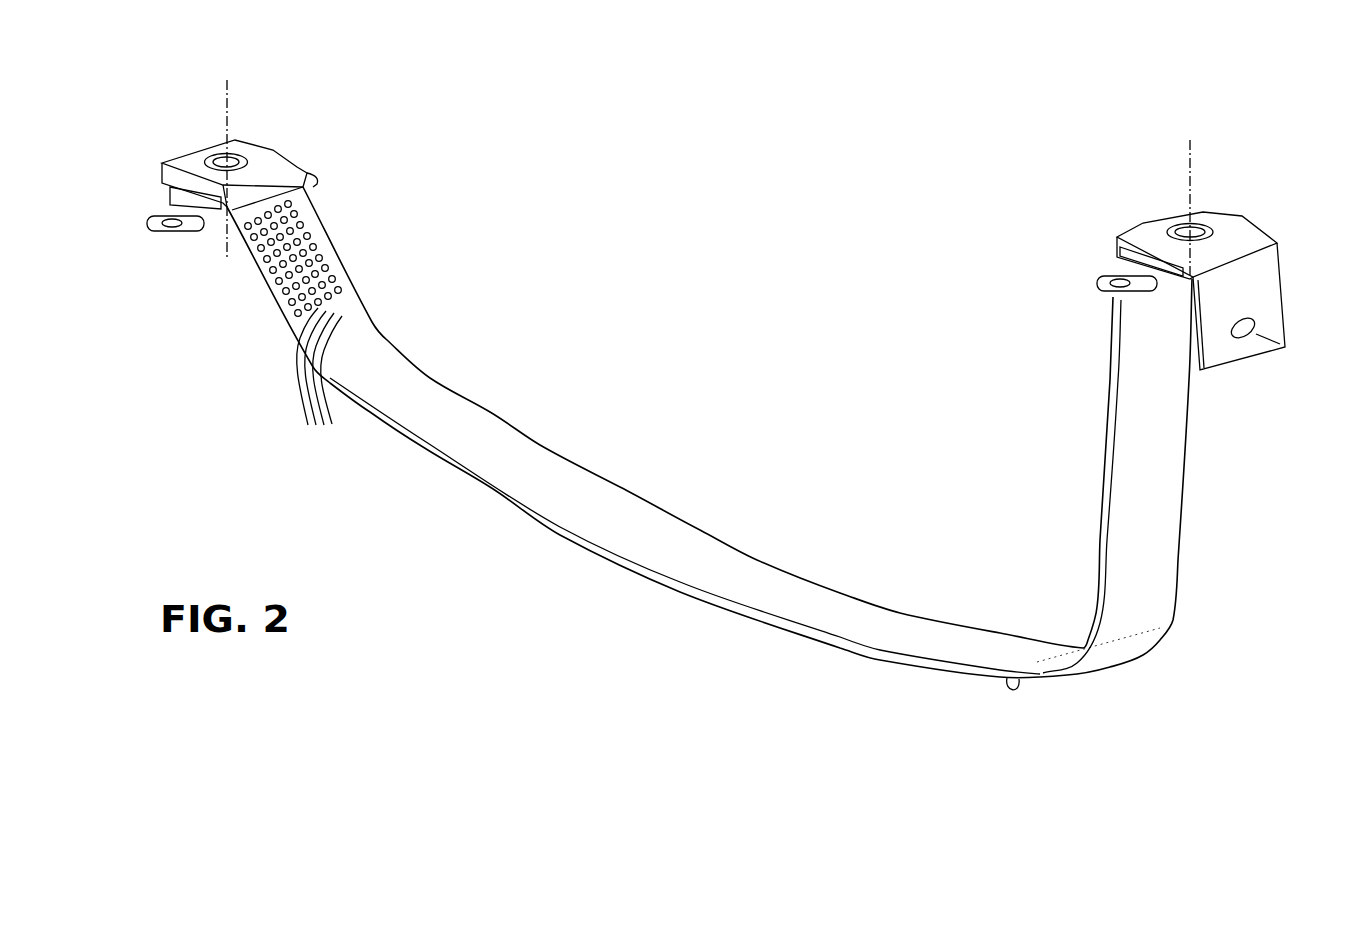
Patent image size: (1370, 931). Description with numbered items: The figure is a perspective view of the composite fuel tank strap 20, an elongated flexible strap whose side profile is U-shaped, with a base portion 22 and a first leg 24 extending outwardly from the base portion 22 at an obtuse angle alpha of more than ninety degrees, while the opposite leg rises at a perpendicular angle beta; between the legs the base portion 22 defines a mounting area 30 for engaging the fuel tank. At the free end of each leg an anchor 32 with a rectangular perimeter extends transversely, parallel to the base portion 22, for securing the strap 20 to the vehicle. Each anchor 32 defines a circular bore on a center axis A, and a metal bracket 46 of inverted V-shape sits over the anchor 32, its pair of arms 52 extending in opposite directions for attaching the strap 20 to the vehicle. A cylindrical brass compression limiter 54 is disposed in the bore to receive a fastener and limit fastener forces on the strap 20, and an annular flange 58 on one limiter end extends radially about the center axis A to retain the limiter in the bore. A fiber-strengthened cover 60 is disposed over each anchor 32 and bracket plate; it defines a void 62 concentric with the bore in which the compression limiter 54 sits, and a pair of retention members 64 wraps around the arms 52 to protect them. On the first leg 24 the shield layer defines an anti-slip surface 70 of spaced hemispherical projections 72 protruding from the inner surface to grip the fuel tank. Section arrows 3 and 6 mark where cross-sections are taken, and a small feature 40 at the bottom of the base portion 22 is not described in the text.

The strap 20 is at (699, 489).
The base portion 22 is at (578, 541).
The first leg 24 is at (262, 292).
The mounting area 30 is at (405, 408).
The anchor 32 is at (188, 158).
The bottom tab 40 is at (1007, 690).
The bracket 46 is at (157, 203).
The arms 52 is at (318, 178).
The compression limiter 54 is at (224, 143).
The annular flange 58 is at (217, 150).
The cover 60 is at (158, 160).
The void 62 is at (250, 153).
The retention members 64 is at (207, 212).
The anti-slip surface 70 is at (334, 239).
The projections 72 is at (319, 378).
The center axis A is at (232, 92).
The section line 3 is at (1090, 233).
The section line 6 is at (1033, 657).